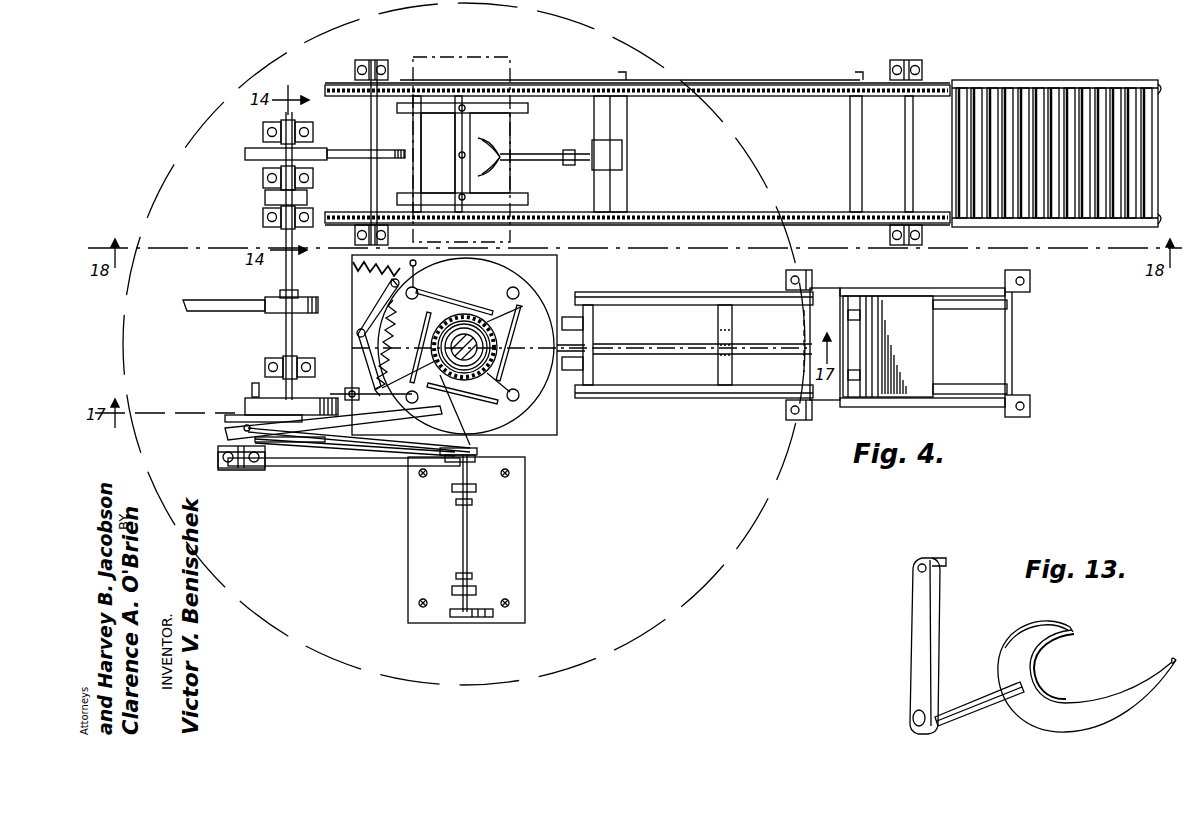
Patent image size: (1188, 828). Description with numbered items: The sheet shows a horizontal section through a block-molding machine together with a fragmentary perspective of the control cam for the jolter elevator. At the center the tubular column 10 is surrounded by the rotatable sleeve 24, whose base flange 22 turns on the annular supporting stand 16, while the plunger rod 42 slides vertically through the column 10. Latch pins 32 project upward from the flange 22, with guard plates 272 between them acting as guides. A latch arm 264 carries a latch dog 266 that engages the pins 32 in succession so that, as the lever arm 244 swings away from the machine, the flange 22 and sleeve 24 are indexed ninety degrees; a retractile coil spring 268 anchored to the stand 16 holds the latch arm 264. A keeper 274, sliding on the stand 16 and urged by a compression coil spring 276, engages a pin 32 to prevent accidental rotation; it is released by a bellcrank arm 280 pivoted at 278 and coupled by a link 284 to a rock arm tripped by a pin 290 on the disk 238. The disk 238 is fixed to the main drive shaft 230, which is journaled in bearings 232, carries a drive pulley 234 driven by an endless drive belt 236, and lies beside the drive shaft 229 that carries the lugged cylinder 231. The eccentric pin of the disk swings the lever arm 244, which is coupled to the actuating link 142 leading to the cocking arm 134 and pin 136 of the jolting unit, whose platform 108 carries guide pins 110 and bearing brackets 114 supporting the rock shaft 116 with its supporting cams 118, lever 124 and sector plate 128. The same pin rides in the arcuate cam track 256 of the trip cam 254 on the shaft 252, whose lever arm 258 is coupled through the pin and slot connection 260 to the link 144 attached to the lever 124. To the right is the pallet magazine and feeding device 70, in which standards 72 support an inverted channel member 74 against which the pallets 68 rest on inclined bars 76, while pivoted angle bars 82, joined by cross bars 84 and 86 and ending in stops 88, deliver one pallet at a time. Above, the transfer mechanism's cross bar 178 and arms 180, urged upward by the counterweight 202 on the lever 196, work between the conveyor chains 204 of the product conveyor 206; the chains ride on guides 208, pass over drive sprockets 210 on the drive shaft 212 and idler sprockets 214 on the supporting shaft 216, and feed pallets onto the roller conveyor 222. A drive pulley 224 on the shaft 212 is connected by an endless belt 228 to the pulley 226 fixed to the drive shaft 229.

In FIG. 4, the column 10 is at (492, 334).
In FIG. 4, the annular supporting stand 16 is at (557, 420).
In FIG. 4, the base flange 22 is at (1058, 105).
In FIG. 4, the rotatable sleeve 24 is at (465, 314).
In FIG. 4, the latch pins 32 is at (518, 290).
In FIG. 4, the plunger rod 42 is at (498, 318).
In FIG. 4, the pallets 68 is at (920, 355).
In FIG. 4, the pallet magazine and feeding device 70 is at (915, 286).
In FIG. 4, the standards 72 is at (798, 418).
In FIG. 4, the inverted channel member 74 is at (830, 300).
In FIG. 4, the inclined parallel bars 76 is at (980, 305).
In FIG. 4, the angle bars 82 is at (690, 292).
In FIG. 4, the cross bar 84 is at (593, 335).
In FIG. 4, the cross bar 86 is at (732, 322).
In FIG. 4, the stops 88 is at (568, 317).
In FIG. 4, the platform 108 is at (510, 530).
In FIG. 4, the guide pins 110 is at (419, 477).
In FIG. 4, the bearing brackets 114 is at (472, 503).
In FIG. 4, the rock shaft 116 is at (463, 540).
In FIG. 4, the supporting cams 118 is at (452, 492).
In FIG. 4, the lever 124 is at (455, 468).
In FIG. 4, the sector plate 128 is at (480, 452).
In FIG. 4, the cocking arm 134 is at (476, 456).
In FIG. 4, the pin 136 is at (470, 442).
In FIG. 4, the actuating link 142 is at (330, 468).
In FIG. 4, the link 144 is at (333, 440).
In FIG. 4, the cross bar 178 is at (470, 125).
In FIG. 4, the arms 180 is at (432, 113).
In FIG. 4, the lever 196 is at (532, 154).
In FIG. 4, the counterweight 202 is at (612, 156).
In FIG. 4, the conveyor chains 204 is at (690, 94).
In FIG. 4, the product conveyor 206 is at (755, 78).
In FIG. 4, the guides 208 is at (798, 85).
In FIG. 4, the drive sprockets 210 is at (340, 88).
In FIG. 4, the drive shaft 212 is at (371, 121).
In FIG. 4, the idler sprockets 214 is at (928, 83).
In FIG. 4, the horizontal supporting shaft 216 is at (905, 141).
In FIG. 4, the roller conveyor 222 is at (1105, 228).
In FIG. 4, the drive pulley 224 is at (366, 150).
In FIG. 4, the pulley 226 is at (258, 160).
In FIG. 4, the endless belt 228 is at (334, 160).
In FIG. 4, the drive shaft 229 is at (285, 118).
In FIG. 4, the main drive shaft 230 is at (287, 276).
In FIG. 4, the cylinder 231 is at (265, 201).
In FIG. 4, the bearings 232 is at (280, 220).
In FIG. 4, the drive pulley 234 is at (298, 292).
In FIG. 4, the endless drive belt 236 is at (208, 308).
In FIG. 4, the disk 238 is at (250, 405).
In FIG. 4, the lever arm 244 is at (228, 420).
In FIG. 13, the shaft 252 is at (970, 702).
In FIG. 4, the trip cam 254 is at (278, 470).
In FIG. 13, the trip cam 254 is at (1092, 722).
In FIG. 13, the arcuate cam track 256 is at (1100, 696).
In FIG. 13, the lever arm 258 is at (916, 640).
In FIG. 13, the pin and slot connection 260 is at (947, 562).
In FIG. 4, the latch arm 264 is at (376, 436).
In FIG. 4, the latch dog 266 is at (462, 388).
In FIG. 4, the retractile coil spring 268 is at (392, 296).
In FIG. 4, the guard plates 272 is at (482, 300).
In FIG. 4, the keeper 274 is at (398, 258).
In FIG. 4, the compression coil spring 276 is at (362, 262).
In FIG. 4, the pivot 278 is at (359, 335).
In FIG. 4, the bellcrank arm 280 is at (361, 330).
In FIG. 4, the link 284 is at (352, 388).
In FIG. 4, the pin 290 is at (256, 383).